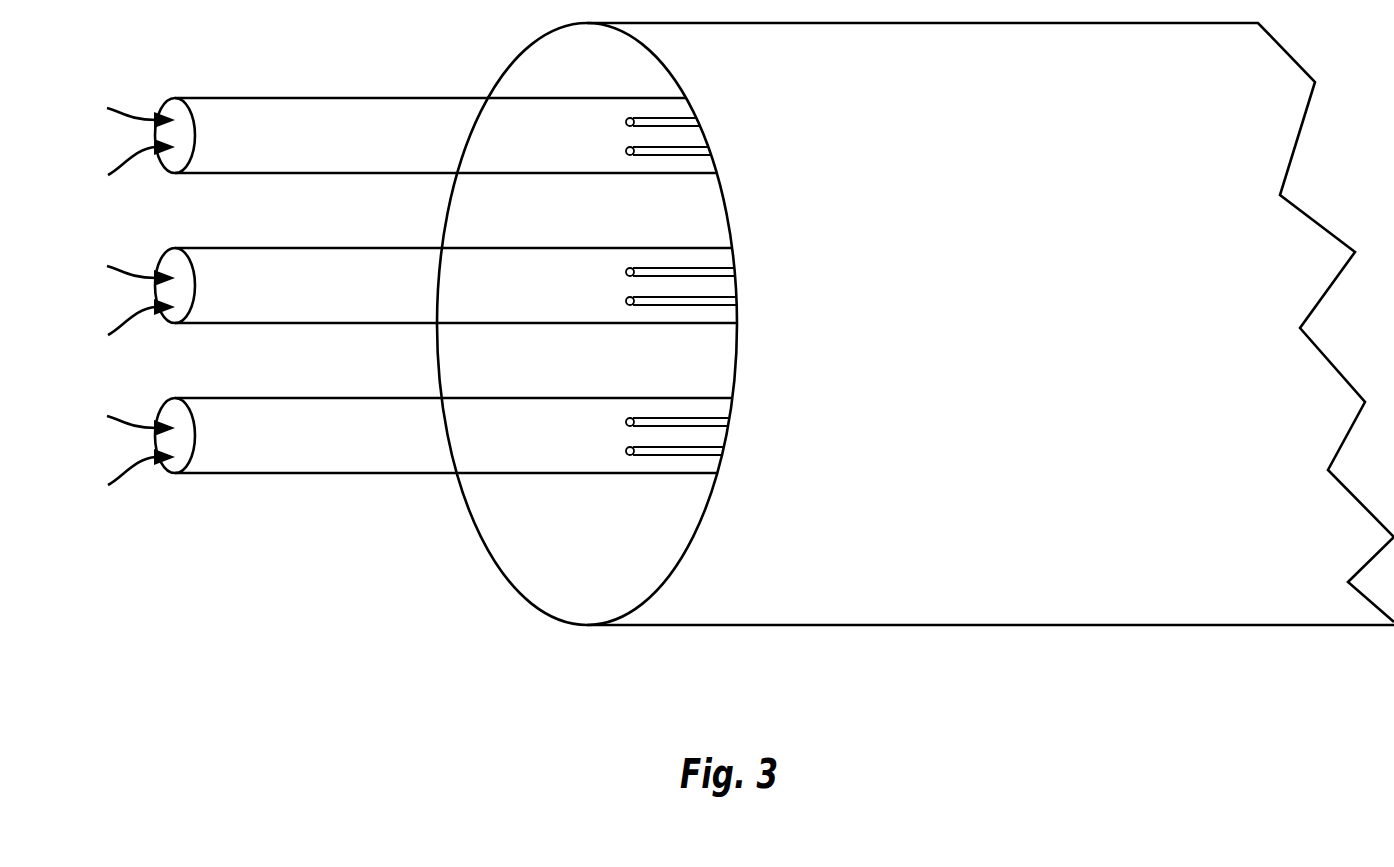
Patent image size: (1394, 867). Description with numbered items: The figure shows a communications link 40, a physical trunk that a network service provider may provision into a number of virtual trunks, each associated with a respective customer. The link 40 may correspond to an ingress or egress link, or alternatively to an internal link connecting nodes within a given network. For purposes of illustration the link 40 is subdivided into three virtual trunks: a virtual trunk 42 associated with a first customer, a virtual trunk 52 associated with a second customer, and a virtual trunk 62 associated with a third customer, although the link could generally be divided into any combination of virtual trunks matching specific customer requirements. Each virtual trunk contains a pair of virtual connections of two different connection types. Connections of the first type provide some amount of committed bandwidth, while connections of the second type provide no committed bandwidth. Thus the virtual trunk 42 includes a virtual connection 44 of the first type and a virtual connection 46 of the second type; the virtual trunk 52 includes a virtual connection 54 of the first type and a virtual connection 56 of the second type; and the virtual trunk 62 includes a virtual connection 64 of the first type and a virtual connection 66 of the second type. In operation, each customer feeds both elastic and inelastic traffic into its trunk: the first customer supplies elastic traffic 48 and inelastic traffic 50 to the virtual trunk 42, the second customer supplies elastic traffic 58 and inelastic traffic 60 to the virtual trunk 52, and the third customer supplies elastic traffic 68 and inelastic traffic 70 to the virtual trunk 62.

The communications link 40 is at (985, 366).
The virtual trunk 42 is at (282, 147).
The virtual connection 44 is at (626, 120).
The virtual connection 46 is at (626, 154).
The elastic traffic 48 is at (125, 93).
The inelastic traffic 50 is at (126, 164).
The virtual trunk 52 is at (282, 297).
The virtual connection 54 is at (626, 270).
The virtual connection 56 is at (626, 304).
The elastic traffic 58 is at (125, 251).
The inelastic traffic 60 is at (126, 323).
The virtual trunk 62 is at (282, 447).
The virtual connection 64 is at (626, 420).
The virtual connection 66 is at (626, 454).
The elastic traffic 68 is at (125, 401).
The inelastic traffic 70 is at (126, 473).